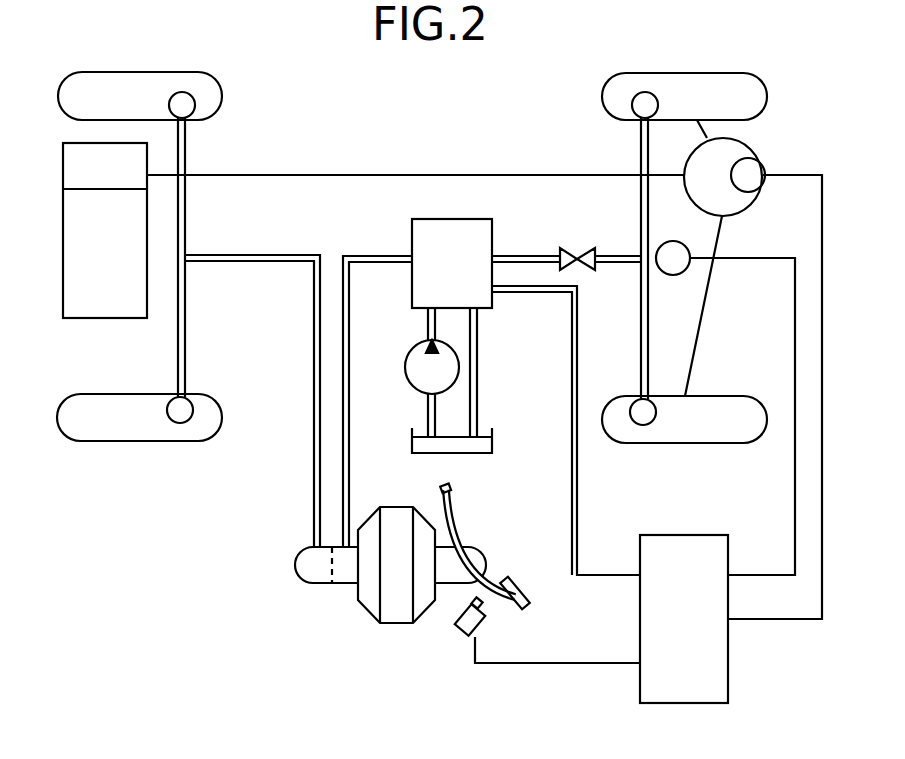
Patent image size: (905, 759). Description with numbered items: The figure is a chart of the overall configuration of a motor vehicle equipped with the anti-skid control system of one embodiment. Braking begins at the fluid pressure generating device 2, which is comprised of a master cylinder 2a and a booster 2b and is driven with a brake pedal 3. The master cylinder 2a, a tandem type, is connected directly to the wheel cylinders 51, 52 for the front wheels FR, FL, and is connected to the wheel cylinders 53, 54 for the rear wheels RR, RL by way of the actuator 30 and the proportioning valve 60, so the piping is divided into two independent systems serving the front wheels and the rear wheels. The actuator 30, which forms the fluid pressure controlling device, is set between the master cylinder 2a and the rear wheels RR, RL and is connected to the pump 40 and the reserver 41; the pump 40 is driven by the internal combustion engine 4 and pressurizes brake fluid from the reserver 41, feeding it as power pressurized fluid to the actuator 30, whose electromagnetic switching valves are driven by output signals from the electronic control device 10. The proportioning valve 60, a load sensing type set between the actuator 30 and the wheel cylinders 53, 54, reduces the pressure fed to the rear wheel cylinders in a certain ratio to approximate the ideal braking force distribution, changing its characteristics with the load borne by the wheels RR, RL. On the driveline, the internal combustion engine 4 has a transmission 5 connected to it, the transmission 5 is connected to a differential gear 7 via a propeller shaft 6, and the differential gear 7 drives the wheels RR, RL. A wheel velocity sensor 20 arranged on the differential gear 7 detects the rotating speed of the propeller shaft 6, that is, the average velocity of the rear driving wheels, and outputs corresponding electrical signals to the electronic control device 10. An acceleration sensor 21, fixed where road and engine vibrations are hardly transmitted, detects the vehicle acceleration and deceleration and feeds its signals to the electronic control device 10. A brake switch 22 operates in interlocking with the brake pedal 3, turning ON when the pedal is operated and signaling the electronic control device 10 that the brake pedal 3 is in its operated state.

The fluid pressure generating device 2 is at (375, 606).
The master cylinder 2a is at (310, 567).
The booster 2b is at (405, 612).
The brake pedal 3 is at (523, 593).
The internal combustion engine 4 is at (105, 303).
The transmission 5 is at (73, 172).
The propeller shaft 6 is at (320, 165).
The differential gear 7 is at (750, 143).
The electronic control device 10 is at (712, 648).
The wheel velocity sensor 20 is at (740, 192).
The acceleration sensor 21 is at (673, 275).
The brake switch 22 is at (463, 620).
The actuator 30 is at (423, 239).
The pump 40 is at (420, 370).
The reserver 41 is at (483, 443).
The wheel cylinder 51 is at (187, 104).
The wheel cylinder 52 is at (183, 405).
The wheel cylinder 53 is at (638, 110).
The wheel cylinder 54 is at (643, 412).
The proportioning valve 60 is at (582, 250).
The wheel FR is at (205, 96).
The wheel FL is at (180, 432).
The wheel RR is at (618, 92).
The wheel RL is at (697, 427).